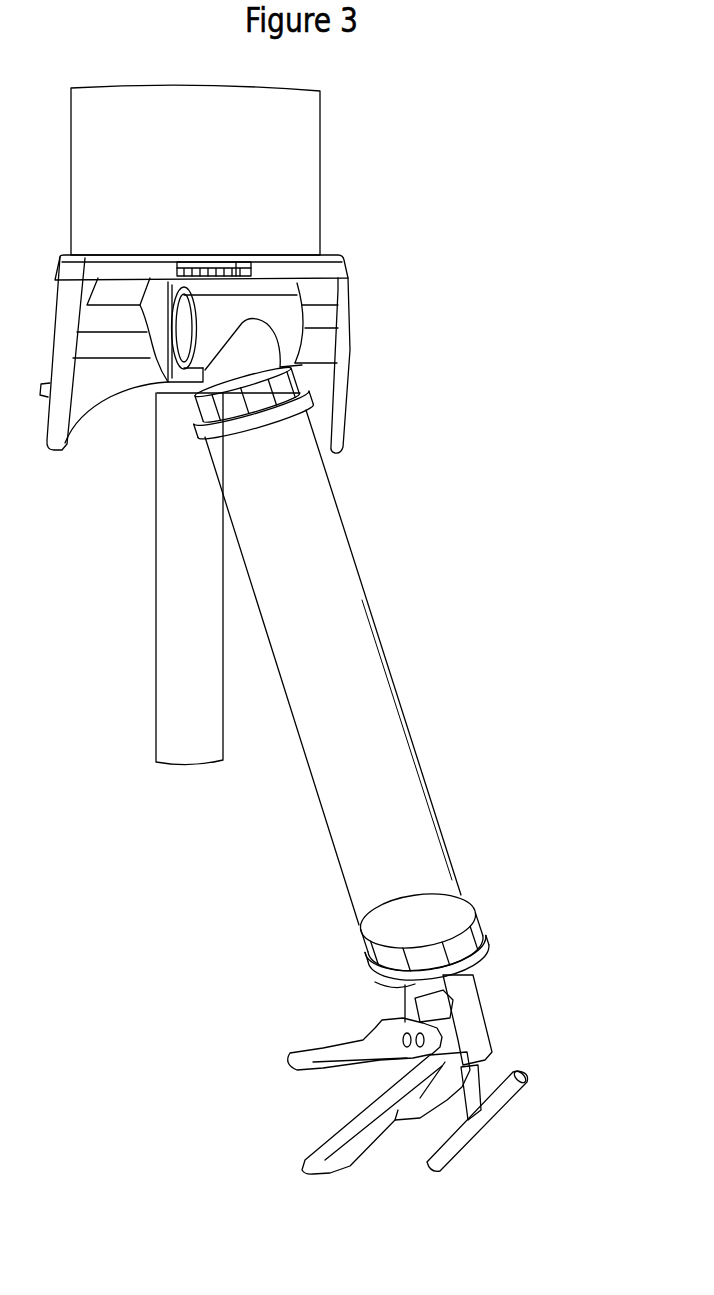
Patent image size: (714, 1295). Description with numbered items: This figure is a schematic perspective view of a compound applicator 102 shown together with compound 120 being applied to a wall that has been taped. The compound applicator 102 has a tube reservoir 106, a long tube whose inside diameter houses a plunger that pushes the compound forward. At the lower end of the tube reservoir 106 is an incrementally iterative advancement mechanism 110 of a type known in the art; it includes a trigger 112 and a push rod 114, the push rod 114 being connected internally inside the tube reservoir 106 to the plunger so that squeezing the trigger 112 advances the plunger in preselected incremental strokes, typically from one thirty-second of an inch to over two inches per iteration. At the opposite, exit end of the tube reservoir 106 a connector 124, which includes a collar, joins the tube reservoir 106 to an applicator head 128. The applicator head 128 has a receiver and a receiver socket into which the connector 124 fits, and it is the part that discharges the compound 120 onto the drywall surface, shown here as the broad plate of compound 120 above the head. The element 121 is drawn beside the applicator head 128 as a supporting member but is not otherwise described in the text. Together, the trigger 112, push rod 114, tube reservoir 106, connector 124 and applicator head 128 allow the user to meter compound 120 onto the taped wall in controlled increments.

The compound applicator 102 is at (334, 279).
The tube reservoir 106 is at (365, 745).
The incrementally iterative advancement mechanism 110 is at (391, 1039).
The trigger 112 is at (320, 1060).
The push rod 114 is at (467, 1088).
The compound 120 is at (250, 133).
The support post 121 is at (182, 648).
The connector 124 is at (292, 340).
The applicator head 128 is at (410, 315).